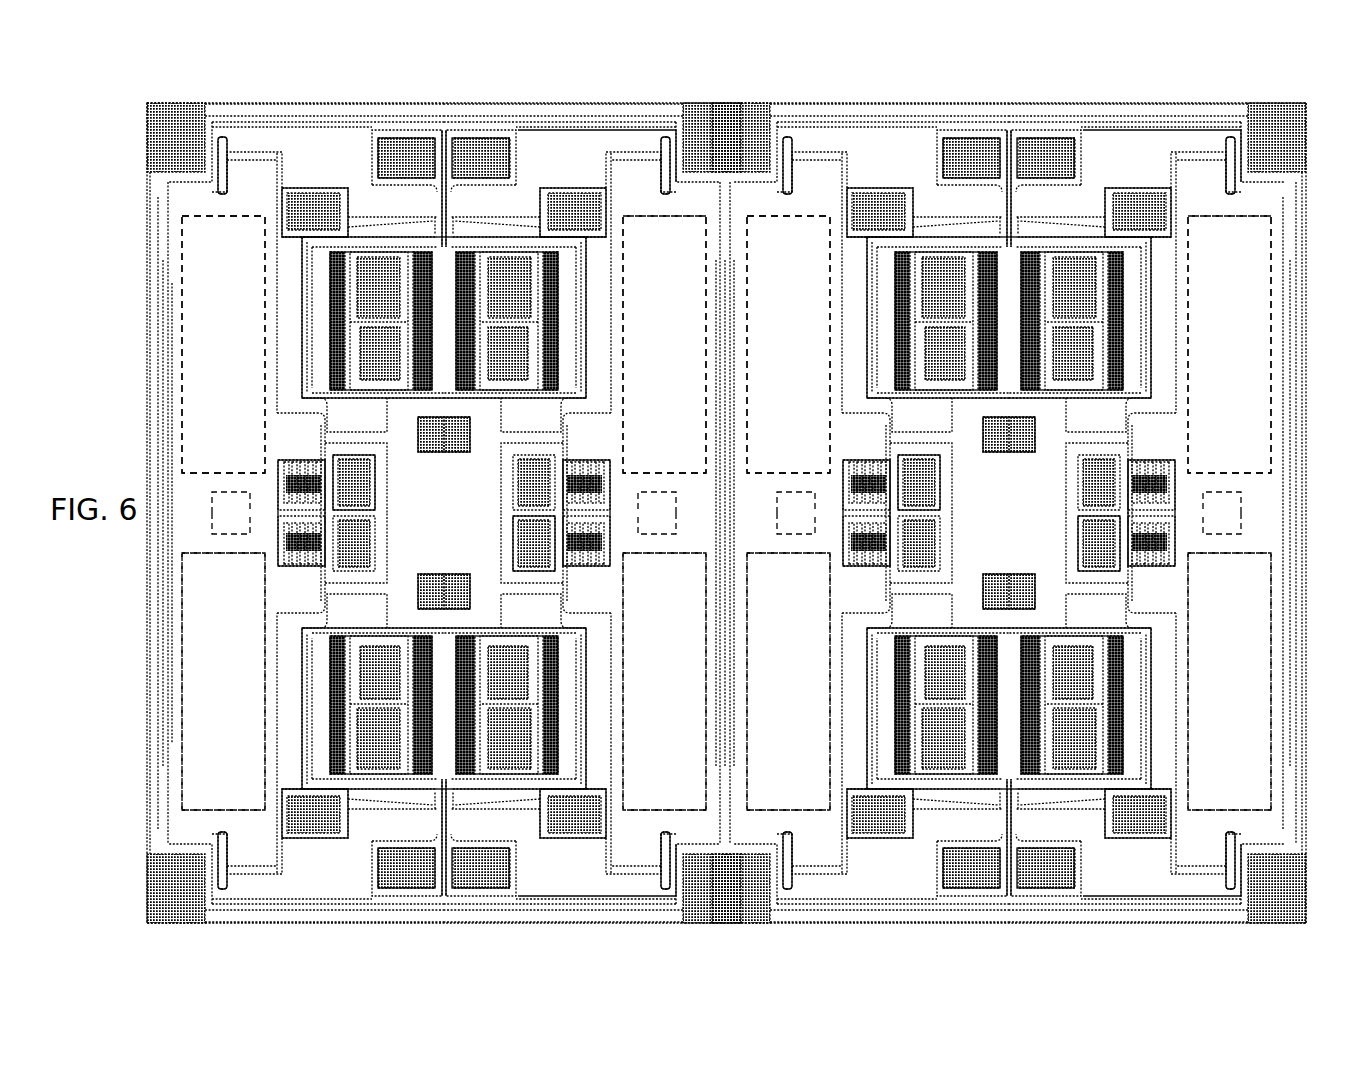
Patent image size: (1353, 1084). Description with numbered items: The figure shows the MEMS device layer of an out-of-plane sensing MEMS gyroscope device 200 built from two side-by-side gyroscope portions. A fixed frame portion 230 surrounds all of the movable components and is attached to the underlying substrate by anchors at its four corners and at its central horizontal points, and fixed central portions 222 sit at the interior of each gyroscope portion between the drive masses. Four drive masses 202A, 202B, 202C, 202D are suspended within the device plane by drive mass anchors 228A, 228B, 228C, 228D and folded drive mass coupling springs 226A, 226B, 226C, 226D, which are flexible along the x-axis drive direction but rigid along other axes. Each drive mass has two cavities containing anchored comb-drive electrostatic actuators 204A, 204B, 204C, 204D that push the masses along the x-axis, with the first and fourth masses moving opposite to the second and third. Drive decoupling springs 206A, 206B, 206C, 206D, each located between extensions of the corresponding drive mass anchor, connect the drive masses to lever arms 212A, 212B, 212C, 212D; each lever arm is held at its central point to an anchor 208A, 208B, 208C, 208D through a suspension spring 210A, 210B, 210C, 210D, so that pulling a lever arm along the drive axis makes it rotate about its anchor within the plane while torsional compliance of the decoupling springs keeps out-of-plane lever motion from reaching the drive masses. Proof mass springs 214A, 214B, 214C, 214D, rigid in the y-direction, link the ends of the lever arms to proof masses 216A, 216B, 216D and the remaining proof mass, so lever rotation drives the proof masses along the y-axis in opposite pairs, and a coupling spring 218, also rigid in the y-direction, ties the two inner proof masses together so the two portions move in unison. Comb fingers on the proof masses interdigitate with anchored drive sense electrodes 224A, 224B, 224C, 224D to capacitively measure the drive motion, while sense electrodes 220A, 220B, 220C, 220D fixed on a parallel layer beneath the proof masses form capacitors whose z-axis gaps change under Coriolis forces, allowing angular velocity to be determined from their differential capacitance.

The transducer device 200 is at (1127, 84).
The drive mass 202A is at (412, 392).
The drive mass 202B is at (412, 640).
The drive mass 202C is at (977, 392).
The drive mass 202D is at (977, 640).
The electrostatic actuator 204A is at (503, 380).
The electrostatic actuator 204B is at (500, 650).
The electrostatic actuator 204C is at (1068, 380).
The electrostatic actuator 204D is at (1065, 650).
The drive decoupling spring 206A is at (442, 230).
The drive decoupling spring 206B is at (446, 797).
The drive decoupling spring 206C is at (1007, 230).
The drive decoupling spring 206D is at (1011, 797).
The anchor 208A is at (386, 138).
The anchor 208B is at (460, 880).
The anchor 208C is at (948, 138).
The anchor 208D is at (993, 880).
The suspension spring 210A is at (460, 160).
The suspension spring 210B is at (389, 889).
The suspension spring 210C is at (1022, 160).
The suspension spring 210D is at (1053, 882).
The lever arm 212A is at (535, 160).
The lever arm 212B is at (305, 883).
The lever arm 212C is at (1108, 160).
The lever arm 212D is at (1098, 883).
The proof mass spring 214A is at (228, 878).
The proof mass spring 214B is at (665, 878).
The proof mass spring 214C is at (792, 878).
The proof mass spring 214D is at (1230, 878).
The proof mass 216A is at (273, 447).
The proof mass 216B is at (569, 447).
The proof mass 216D is at (1134, 447).
The coupling spring 218 is at (735, 450).
The sense electrode 220A is at (200, 248).
The sense electrode 220B is at (641, 248).
The sense electrode 220C is at (765, 248).
The sense electrode 220D is at (1206, 248).
The central portion 222 is at (430, 524).
The drive sense electrode 224A is at (362, 470).
The drive sense electrode 224B is at (530, 553).
The drive sense electrode 224C is at (927, 470).
The drive sense electrode 224D is at (1095, 553).
The drive mass coupling spring 226A is at (590, 319).
The drive mass coupling spring 226B is at (590, 660).
The drive mass coupling spring 226C is at (1155, 319).
The drive mass coupling spring 226D is at (1155, 669).
The drive mass anchor 228A is at (292, 222).
The drive mass anchor 228B is at (292, 823).
The drive mass anchor 228C is at (857, 222).
The drive mass anchor 228D is at (857, 823).
The frame portion 230 is at (1303, 197).